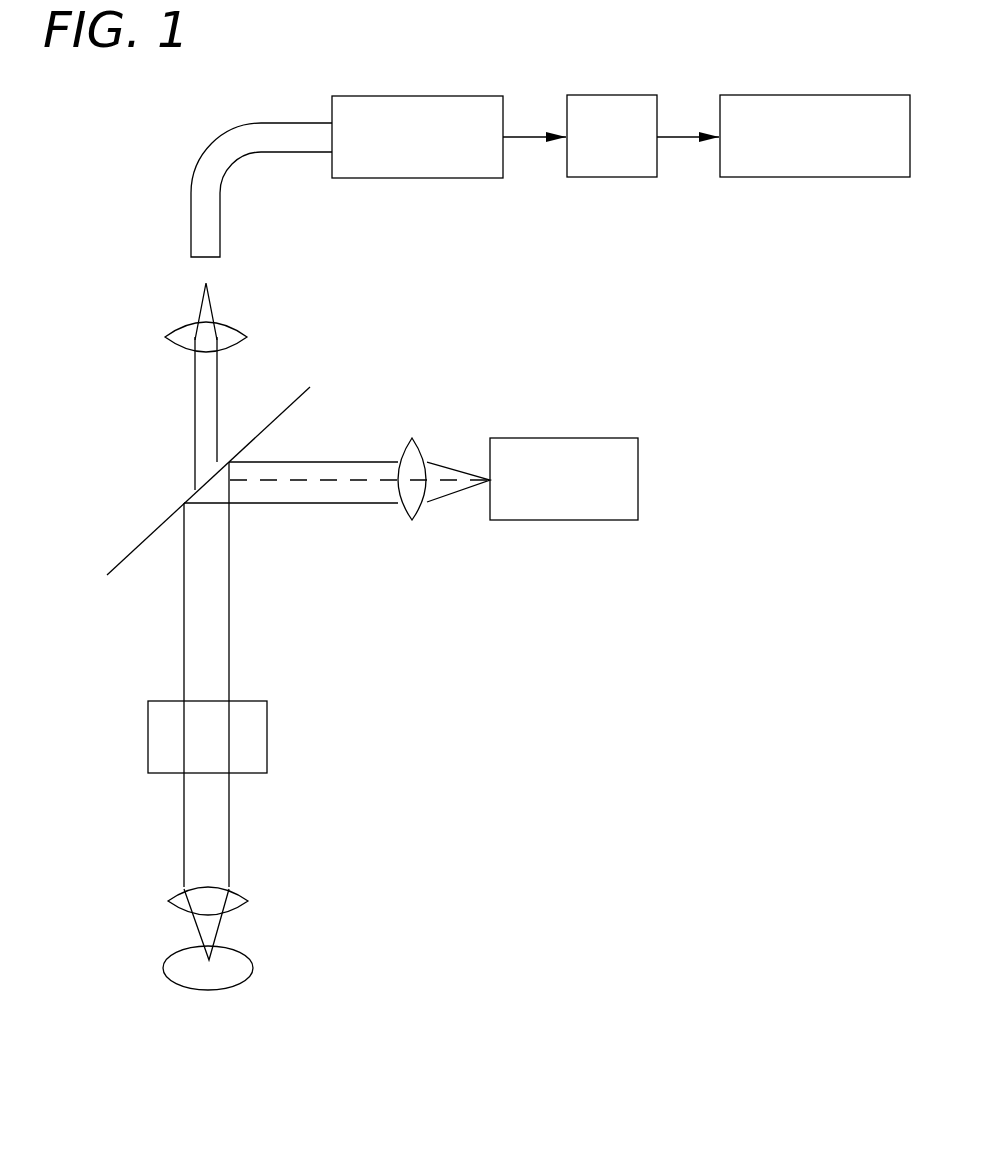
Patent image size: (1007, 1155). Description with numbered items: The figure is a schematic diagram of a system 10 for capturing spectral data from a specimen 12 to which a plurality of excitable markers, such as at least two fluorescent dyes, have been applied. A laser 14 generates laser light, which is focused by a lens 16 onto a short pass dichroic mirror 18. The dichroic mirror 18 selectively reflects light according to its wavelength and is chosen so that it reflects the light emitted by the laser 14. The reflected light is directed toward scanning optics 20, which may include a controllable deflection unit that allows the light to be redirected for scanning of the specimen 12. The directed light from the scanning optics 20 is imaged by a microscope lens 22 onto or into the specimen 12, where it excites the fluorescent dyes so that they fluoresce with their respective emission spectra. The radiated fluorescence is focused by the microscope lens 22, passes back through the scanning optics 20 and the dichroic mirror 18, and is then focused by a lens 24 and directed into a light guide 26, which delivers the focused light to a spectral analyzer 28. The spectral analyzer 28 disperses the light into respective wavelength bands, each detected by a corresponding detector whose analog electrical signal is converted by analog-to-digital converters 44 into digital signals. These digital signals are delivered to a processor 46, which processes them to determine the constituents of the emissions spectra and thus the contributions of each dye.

The system 10 is at (110, 430).
The specimen 12 is at (253, 968).
The laser 14 is at (598, 438).
The lens 16 is at (413, 438).
The short pass dichroic mirror 18 is at (295, 401).
The scanning optics 20 is at (267, 712).
The microscope lens 22 is at (248, 901).
The lens 24 is at (247, 337).
The light guide 26 is at (235, 163).
The spectral analyzer 28 is at (440, 96).
The analog-to-digital converters 44 is at (615, 95).
The processor 46 is at (843, 95).